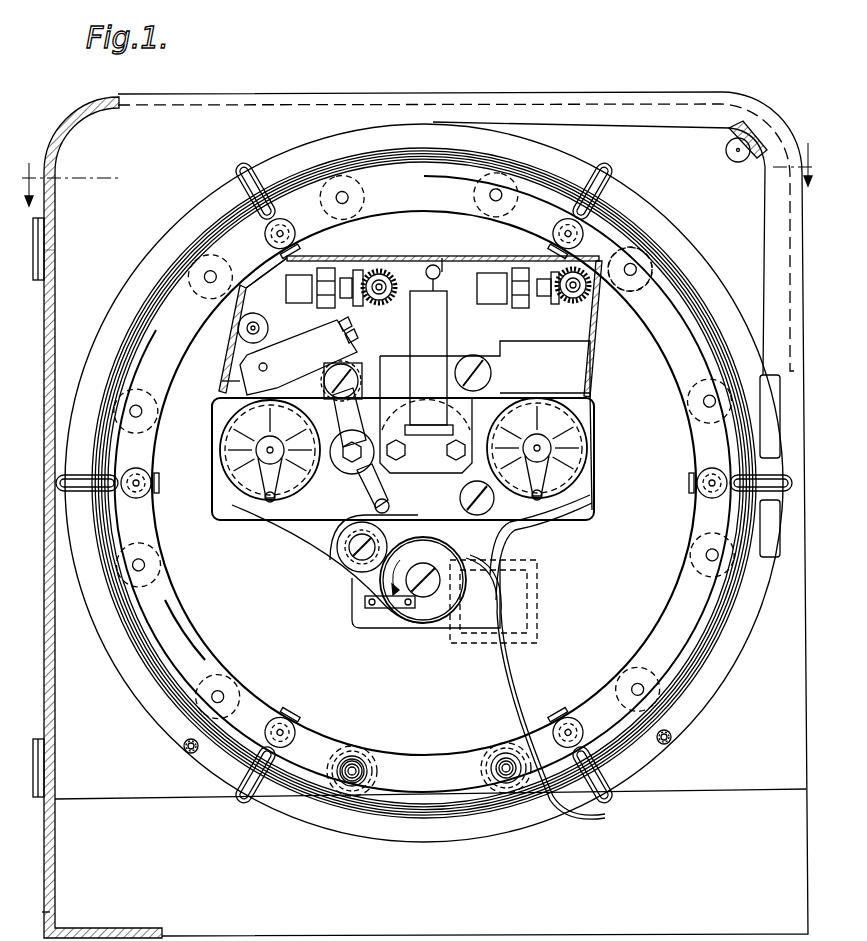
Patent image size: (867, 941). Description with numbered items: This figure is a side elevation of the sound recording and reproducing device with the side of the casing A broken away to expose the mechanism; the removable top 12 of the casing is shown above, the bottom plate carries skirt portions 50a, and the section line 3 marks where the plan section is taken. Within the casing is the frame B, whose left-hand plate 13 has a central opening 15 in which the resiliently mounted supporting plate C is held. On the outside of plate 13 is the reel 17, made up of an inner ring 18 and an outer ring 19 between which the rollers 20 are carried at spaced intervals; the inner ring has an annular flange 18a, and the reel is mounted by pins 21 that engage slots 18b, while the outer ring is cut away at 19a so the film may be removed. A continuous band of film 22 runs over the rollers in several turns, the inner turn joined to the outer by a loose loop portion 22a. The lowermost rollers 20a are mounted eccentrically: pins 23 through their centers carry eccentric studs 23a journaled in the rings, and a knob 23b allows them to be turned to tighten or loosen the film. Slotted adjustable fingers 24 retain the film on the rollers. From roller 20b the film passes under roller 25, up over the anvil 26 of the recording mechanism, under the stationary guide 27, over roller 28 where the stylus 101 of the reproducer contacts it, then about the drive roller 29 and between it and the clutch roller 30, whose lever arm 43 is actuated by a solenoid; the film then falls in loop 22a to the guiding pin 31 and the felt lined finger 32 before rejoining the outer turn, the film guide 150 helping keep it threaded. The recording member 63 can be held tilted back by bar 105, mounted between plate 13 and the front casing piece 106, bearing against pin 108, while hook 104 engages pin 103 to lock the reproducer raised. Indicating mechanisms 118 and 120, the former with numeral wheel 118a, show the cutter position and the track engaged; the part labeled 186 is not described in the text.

The top 12 is at (304, 95).
The casing A is at (549, 109).
The section line 3— 3 is at (419, 162).
The plate 13 is at (430, 465).
The frame B is at (70, 245).
The skirt portions 50a is at (62, 894).
The cut-away portion 19a is at (600, 232).
The film 22 is at (680, 284).
The inner ring 18 is at (147, 634).
The annular flange 18a is at (147, 688).
The outer ring 19 is at (206, 655).
The reel 17 is at (186, 614).
The rollers 20 is at (205, 258).
The eccentrically mounted rollers 20a is at (340, 785).
The roller 20b is at (640, 258).
The pins 23 is at (337, 745).
The studs 23a is at (362, 755).
The knob 23b is at (364, 765).
The adjustable fingers 24 is at (242, 163).
The pins 21 is at (184, 752).
The screw 186 is at (198, 766).
The slots 18b is at (671, 752).
The felt lined finger 32 is at (742, 124).
The guiding pin 31 is at (725, 151).
The front casing piece 106 is at (475, 257).
The bar 105 is at (443, 256).
The pin 108 is at (441, 272).
The numeral wheel 118a is at (514, 302).
The indicating mechanism 118 is at (537, 297).
The indicating mechanism 120 is at (376, 265).
The hook 104 is at (239, 334).
The pin 103 is at (265, 362).
The stylus 101 is at (221, 381).
The stationary guide 27 is at (356, 412).
The supporting plate C is at (518, 514).
The central opening 15 is at (520, 532).
The recording member 63 is at (450, 345).
The roller 28 is at (233, 497).
The roller 25 is at (589, 468).
The anvil 26 is at (415, 452).
The film guide 150 is at (350, 522).
The drive roller 29 is at (436, 614).
The clutch roller 30 is at (347, 563).
The lever arm 43 is at (342, 598).
The loose loop portion 22a is at (511, 688).